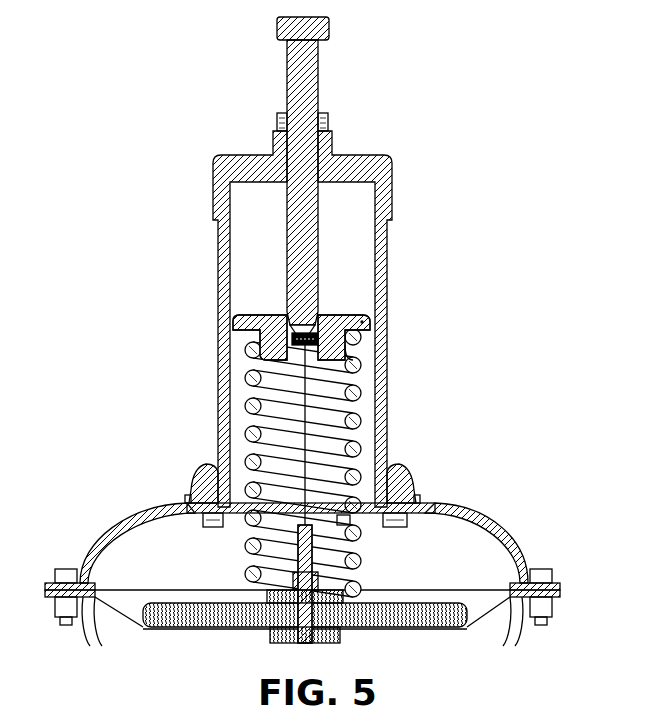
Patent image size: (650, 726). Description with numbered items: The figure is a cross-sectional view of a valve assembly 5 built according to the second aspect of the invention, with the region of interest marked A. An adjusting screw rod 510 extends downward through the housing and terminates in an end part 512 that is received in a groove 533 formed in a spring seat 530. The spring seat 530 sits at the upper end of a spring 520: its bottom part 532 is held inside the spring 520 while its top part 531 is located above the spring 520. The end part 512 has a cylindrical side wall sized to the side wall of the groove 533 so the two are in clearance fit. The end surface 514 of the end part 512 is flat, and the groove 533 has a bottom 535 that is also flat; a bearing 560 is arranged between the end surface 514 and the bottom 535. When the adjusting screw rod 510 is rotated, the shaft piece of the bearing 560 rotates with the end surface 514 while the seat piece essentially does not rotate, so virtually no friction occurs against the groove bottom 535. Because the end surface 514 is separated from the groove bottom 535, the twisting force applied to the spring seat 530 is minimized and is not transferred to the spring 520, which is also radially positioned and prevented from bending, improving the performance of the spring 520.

The valve assembly 5 is at (238, 127).
The adjusting screw rod 510 is at (343, 158).
The end part 512 is at (293, 312).
The end surface 514 is at (310, 327).
The spring 520 is at (392, 468).
The spring seat 530 is at (247, 333).
The top part 531 is at (368, 317).
The bottom part 532 is at (352, 348).
The groove 533 is at (233, 313).
The bottom 535 is at (250, 383).
The bearing 560 is at (320, 339).
The region A is at (362, 320).